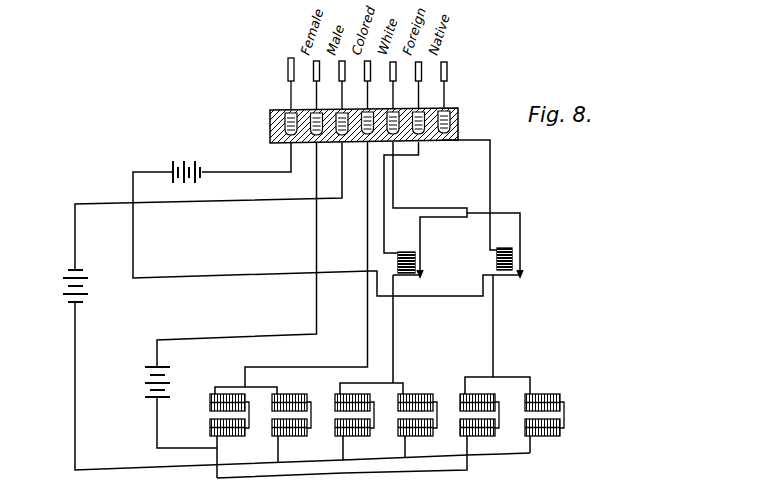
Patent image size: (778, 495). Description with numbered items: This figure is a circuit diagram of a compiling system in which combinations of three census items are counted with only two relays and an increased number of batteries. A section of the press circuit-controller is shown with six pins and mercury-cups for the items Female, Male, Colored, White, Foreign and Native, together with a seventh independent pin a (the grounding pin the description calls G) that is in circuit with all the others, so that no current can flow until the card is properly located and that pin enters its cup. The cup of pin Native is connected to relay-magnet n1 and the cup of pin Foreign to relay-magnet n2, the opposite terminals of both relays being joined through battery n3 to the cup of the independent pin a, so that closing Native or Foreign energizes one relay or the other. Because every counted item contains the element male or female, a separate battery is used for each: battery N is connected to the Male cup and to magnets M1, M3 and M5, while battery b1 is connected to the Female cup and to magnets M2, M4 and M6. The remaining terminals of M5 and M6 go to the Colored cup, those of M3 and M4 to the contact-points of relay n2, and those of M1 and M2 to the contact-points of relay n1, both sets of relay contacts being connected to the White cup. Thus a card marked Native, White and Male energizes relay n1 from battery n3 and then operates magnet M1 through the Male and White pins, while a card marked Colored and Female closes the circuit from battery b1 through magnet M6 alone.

The key a is at (288, 75).
The battery n3 is at (186, 165).
The main battery N is at (81, 286).
The battery b1 is at (164, 382).
The relay-magnet n2 is at (406, 254).
The relay-magnet n1 is at (504, 251).
The operating magnet M6 is at (229, 408).
The operating magnet M5 is at (291, 407).
The operating magnet M4 is at (354, 404).
The operating magnet M3 is at (417, 404).
The operating magnet M2 is at (479, 403).
The operating magnet M1 is at (544, 402).